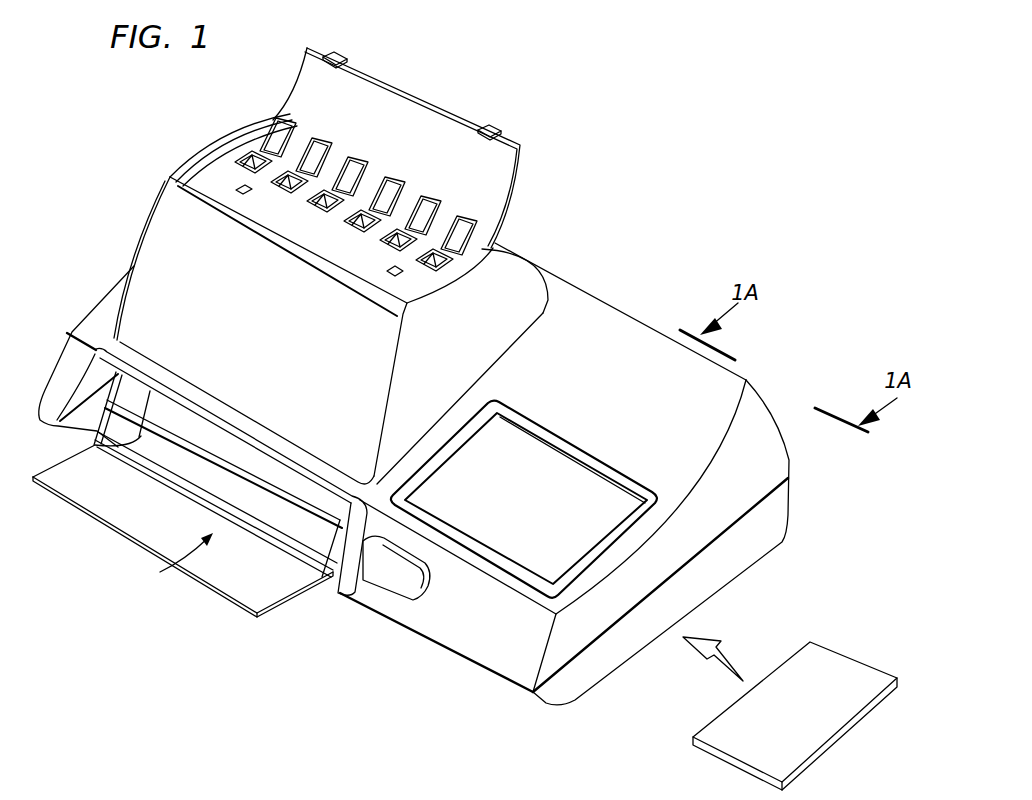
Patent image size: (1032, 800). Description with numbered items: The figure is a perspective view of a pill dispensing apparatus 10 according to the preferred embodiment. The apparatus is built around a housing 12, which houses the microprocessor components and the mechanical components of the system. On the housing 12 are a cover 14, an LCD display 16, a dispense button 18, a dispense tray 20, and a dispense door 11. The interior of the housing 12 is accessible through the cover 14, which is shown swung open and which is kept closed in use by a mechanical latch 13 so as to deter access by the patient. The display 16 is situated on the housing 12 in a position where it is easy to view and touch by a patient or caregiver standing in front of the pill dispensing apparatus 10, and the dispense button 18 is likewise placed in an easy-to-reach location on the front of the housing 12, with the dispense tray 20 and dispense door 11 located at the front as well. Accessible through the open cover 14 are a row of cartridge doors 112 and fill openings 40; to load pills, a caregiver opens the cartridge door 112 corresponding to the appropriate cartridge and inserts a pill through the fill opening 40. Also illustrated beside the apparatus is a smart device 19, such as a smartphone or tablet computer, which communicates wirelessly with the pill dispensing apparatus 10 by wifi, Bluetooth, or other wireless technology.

The pill dispensing apparatus 10 is at (139, 152).
The dispense door 11 is at (240, 585).
The housing 12 is at (617, 296).
The mechanical latch 13 is at (340, 55).
The cover 14 is at (427, 100).
The LCD display 16 is at (496, 509).
The dispense button 18 is at (376, 568).
The smart device 19 is at (777, 717).
The dispense tray 20 is at (166, 561).
The fill opening 40 is at (252, 152).
The cartridge door 112 is at (298, 135).